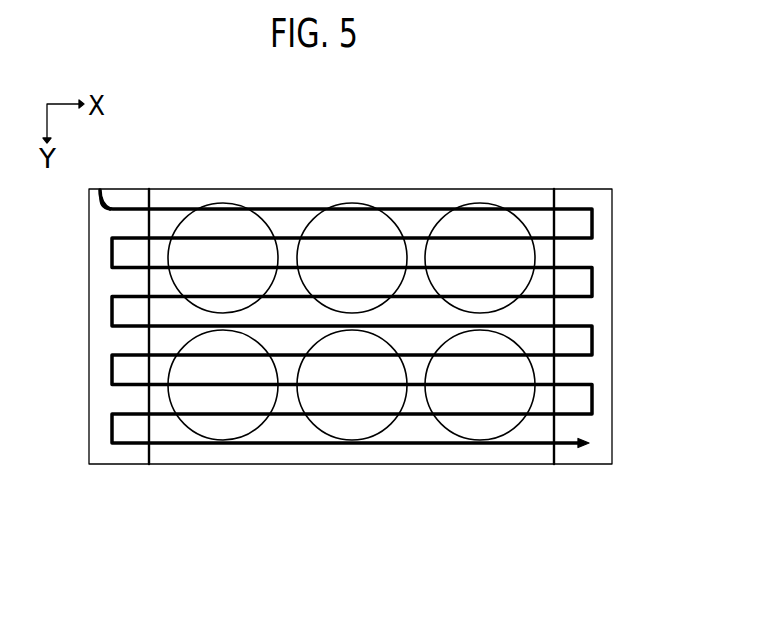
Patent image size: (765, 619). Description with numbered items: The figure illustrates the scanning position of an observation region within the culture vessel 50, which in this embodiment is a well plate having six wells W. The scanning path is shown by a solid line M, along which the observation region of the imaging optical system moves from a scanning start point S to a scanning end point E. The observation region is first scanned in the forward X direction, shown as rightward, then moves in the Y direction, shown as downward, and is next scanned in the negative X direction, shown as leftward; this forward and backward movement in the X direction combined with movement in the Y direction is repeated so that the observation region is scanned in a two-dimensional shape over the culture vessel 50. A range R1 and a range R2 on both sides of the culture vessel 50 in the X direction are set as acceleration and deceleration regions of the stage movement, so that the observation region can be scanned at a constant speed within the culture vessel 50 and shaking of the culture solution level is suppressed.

The culture vessel 50 is at (176, 466).
The solid line M is at (168, 208).
The well W is at (338, 202).
The scanning start point S is at (100, 197).
The scanning end point E is at (589, 443).
The range R1 is at (150, 469).
The range R2 is at (612, 469).